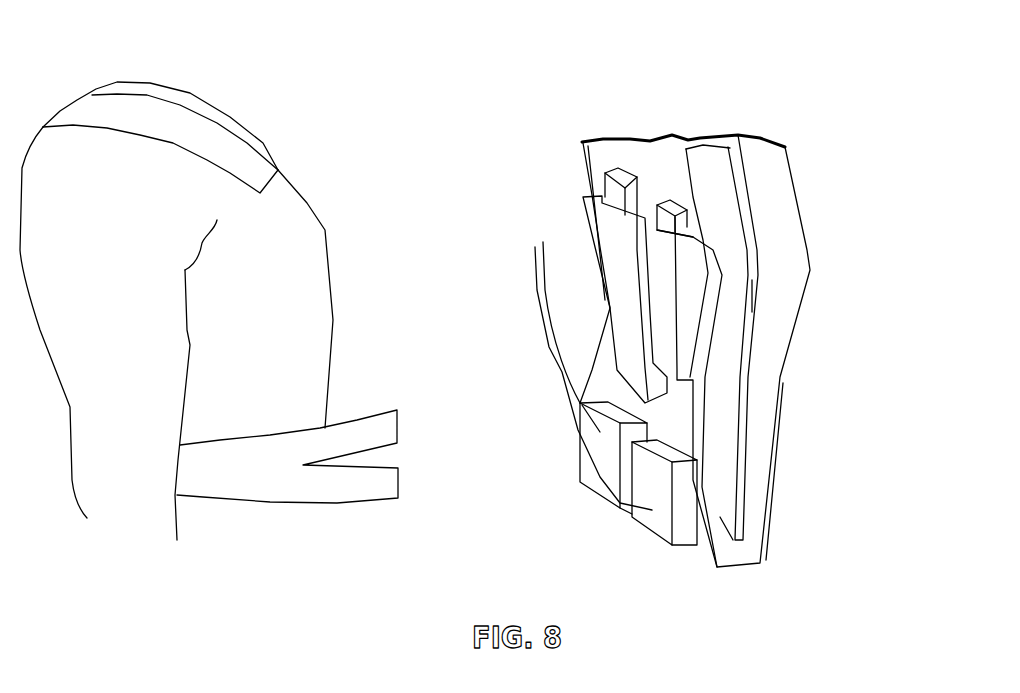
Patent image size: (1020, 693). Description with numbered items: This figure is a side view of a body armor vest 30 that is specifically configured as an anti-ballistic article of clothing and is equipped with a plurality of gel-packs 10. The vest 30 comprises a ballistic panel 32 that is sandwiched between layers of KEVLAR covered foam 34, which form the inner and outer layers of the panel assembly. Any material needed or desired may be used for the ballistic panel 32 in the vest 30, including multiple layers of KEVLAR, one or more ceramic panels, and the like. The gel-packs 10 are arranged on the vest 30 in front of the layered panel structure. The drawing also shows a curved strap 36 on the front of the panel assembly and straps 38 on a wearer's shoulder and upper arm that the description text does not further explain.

The gel-packs 10 is at (670, 202).
The vest 30 is at (703, 298).
The ballistic panel 32 is at (750, 343).
The KEVLAR covered foam 34 is at (717, 173).
The curved strap 36 is at (655, 295).
The attachment strap 38 is at (212, 543).